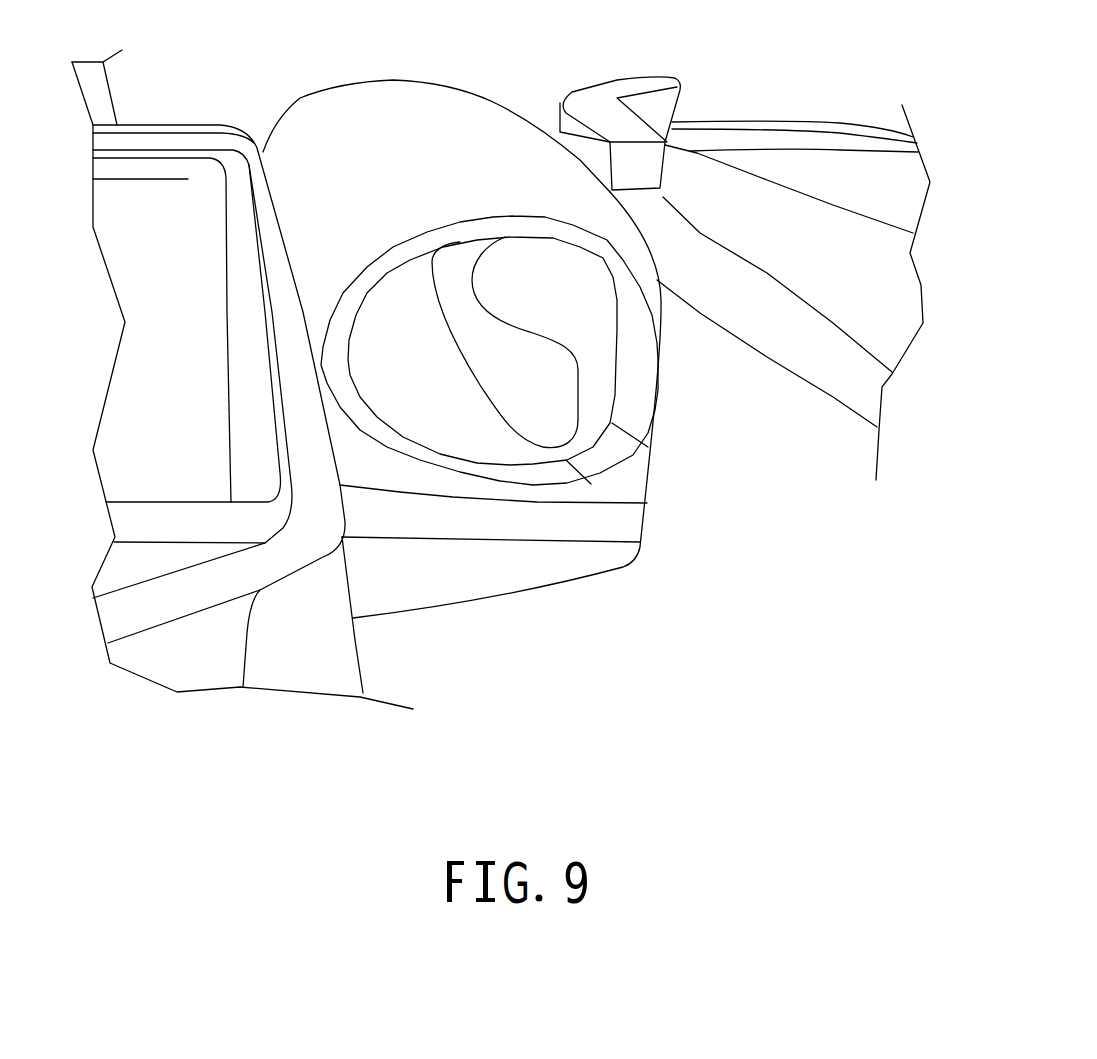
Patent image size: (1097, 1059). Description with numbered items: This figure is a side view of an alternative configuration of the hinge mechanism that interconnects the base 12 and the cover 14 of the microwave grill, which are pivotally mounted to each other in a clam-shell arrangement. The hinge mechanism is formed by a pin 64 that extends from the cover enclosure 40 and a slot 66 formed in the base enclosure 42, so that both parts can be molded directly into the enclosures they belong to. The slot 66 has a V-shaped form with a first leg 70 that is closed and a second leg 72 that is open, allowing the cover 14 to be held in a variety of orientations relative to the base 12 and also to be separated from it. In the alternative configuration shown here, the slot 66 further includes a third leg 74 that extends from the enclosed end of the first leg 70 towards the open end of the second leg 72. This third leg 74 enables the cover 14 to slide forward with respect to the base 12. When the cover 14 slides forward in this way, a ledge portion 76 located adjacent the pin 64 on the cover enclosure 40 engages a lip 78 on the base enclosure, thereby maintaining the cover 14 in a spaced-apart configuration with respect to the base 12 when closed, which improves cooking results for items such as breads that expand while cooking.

The base 12 is at (211, 92).
The cover 14 is at (766, 110).
The cover enclosure 40 is at (884, 297).
The base enclosure 42 is at (207, 645).
The pin 64 is at (580, 103).
The slot 66 is at (542, 477).
The first leg 70 is at (588, 378).
The second leg 72 is at (410, 437).
The third leg 74 is at (515, 313).
The ledge portion 76 is at (668, 80).
The lip 78 is at (318, 470).